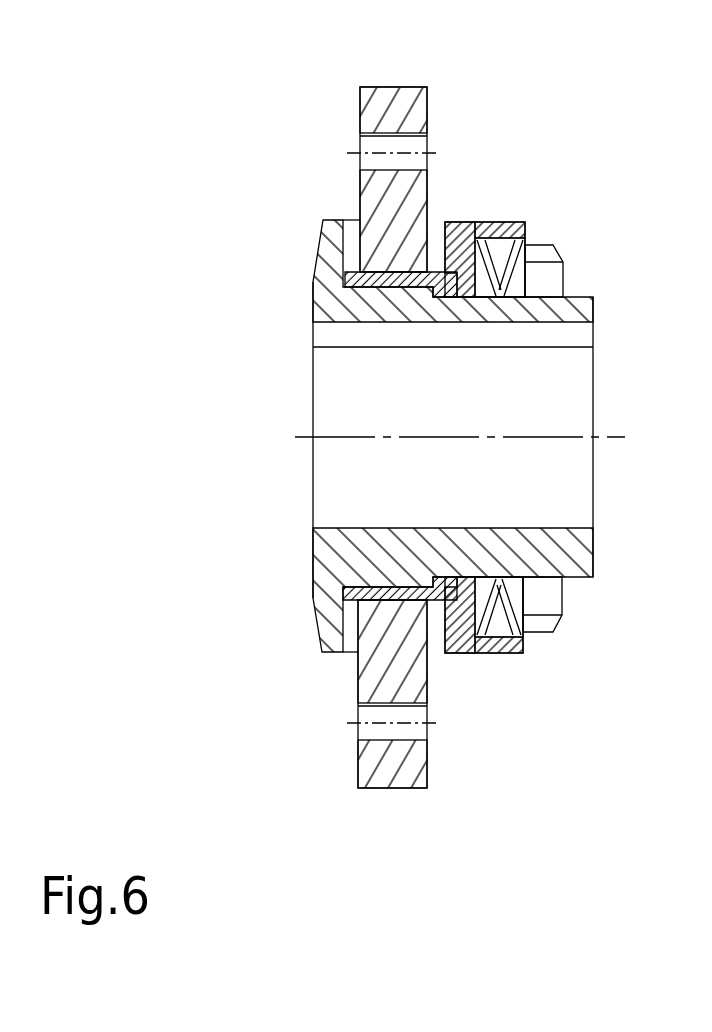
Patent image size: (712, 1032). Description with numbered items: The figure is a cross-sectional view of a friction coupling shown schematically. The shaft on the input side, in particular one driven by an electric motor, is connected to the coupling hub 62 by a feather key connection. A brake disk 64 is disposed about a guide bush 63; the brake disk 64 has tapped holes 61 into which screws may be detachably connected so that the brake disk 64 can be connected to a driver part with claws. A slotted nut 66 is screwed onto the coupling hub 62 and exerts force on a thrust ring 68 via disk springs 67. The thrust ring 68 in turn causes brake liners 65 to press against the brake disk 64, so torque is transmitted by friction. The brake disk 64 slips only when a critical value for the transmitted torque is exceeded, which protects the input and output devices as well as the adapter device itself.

The tapped holes 61 is at (360, 135).
The coupling hub 62 is at (327, 297).
The guide bush 63 is at (353, 587).
The brake disk 64 is at (427, 787).
The brake liners 65 is at (333, 653).
The slotted nut 66 is at (537, 593).
The disk springs 67 is at (522, 235).
The thrust ring 68 is at (463, 222).